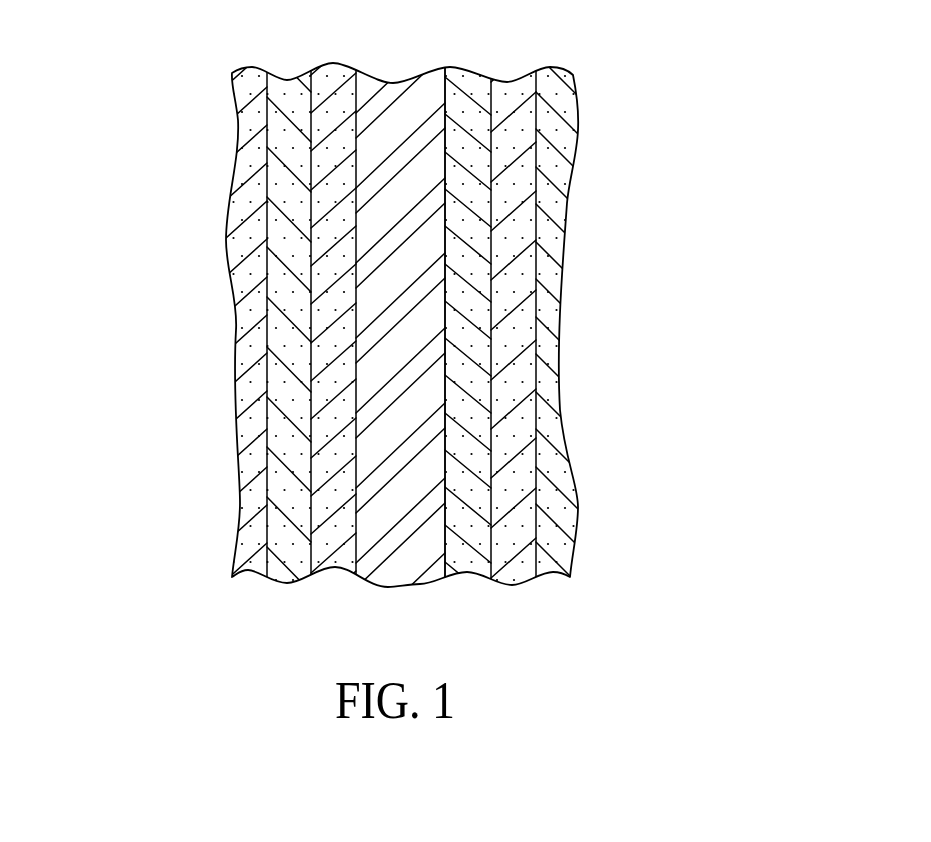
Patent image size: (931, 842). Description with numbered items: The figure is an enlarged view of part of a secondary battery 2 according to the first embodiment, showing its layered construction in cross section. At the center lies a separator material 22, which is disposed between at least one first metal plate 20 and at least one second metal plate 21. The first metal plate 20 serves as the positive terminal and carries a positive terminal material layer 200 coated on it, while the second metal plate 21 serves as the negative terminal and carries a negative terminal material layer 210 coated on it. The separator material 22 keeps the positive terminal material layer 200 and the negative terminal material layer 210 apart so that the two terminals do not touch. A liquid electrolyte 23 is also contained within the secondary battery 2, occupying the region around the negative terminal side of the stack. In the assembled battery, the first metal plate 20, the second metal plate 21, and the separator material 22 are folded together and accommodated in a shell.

The secondary battery 2 is at (618, 192).
The first metal plate 20 is at (290, 105).
The positive terminal material layer 200 is at (250, 90).
The second metal plate 21 is at (515, 535).
The negative terminal material layer 210 is at (470, 92).
The separator material 22 is at (400, 117).
The liquid electrolyte 23 is at (510, 383).